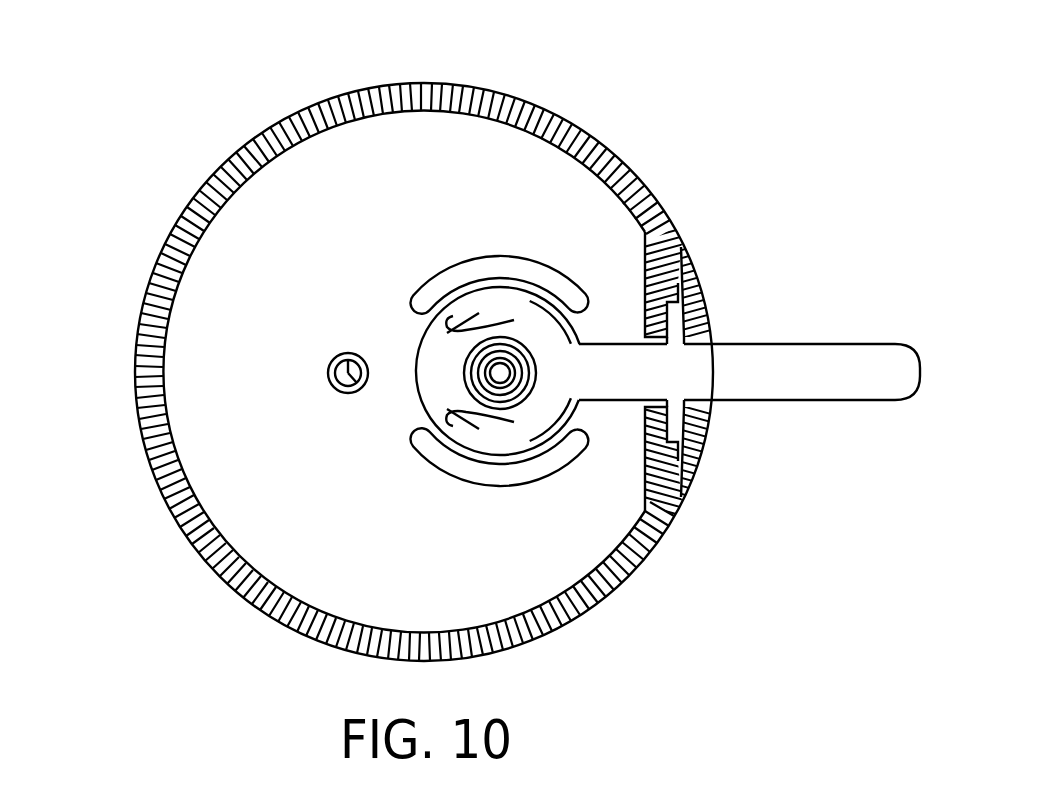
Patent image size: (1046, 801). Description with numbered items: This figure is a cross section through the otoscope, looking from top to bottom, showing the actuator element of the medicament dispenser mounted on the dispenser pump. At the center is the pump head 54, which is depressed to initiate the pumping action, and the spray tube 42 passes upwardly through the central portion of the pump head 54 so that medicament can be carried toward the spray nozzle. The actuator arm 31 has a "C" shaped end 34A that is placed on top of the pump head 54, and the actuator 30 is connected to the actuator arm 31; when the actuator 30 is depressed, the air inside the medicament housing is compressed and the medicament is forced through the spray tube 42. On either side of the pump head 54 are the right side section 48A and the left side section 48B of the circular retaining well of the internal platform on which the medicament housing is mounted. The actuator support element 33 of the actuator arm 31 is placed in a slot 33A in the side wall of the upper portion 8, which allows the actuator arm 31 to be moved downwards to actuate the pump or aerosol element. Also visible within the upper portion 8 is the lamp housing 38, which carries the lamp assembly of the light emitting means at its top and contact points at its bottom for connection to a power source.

The upper portion 8 is at (696, 300).
The actuator 30 is at (837, 344).
The actuator arm 31 is at (620, 401).
The actuator support element 33 is at (697, 453).
The slot 33A is at (684, 266).
The "C" shaped end 34A is at (448, 332).
The lamp housing 38 is at (328, 373).
The spray tube 42 is at (500, 370).
The right side section 48A is at (515, 476).
The left side section 48B is at (467, 277).
The pump head 54 is at (527, 292).